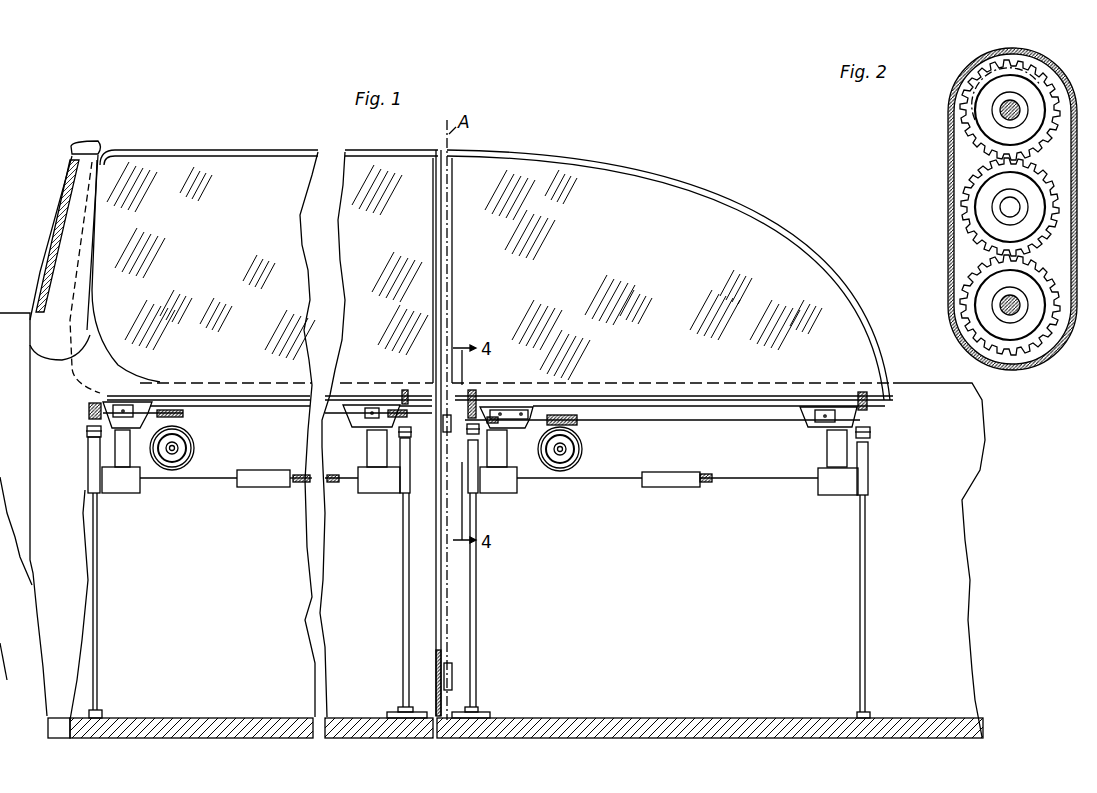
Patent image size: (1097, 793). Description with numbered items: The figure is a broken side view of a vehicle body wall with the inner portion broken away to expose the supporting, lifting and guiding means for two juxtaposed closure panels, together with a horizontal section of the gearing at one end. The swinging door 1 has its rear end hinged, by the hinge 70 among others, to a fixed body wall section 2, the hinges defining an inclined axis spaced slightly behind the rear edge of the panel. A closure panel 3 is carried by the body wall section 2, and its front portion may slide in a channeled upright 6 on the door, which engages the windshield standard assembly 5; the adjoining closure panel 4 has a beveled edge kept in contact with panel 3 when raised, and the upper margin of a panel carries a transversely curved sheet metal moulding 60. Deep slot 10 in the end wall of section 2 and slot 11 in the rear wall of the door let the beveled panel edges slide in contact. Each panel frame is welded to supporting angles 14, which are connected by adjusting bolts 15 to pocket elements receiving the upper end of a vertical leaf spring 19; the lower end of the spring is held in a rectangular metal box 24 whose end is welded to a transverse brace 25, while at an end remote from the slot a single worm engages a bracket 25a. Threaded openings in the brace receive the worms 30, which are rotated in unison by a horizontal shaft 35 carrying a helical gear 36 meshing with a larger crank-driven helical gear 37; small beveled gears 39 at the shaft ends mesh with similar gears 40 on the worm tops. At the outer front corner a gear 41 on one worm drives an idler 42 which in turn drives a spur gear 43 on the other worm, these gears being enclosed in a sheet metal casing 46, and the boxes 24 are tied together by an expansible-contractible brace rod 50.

In FIG. 1, the swinging door 1 is at (175, 708).
In FIG. 1, the body wall section 2 is at (685, 708).
In FIG. 1, the closure panel 3 is at (352, 245).
In FIG. 1, the closure panel 4 is at (668, 185).
In FIG. 1, the windshield standard assembly 5 is at (52, 228).
In FIG. 1, the channeled upright 6 is at (101, 155).
In FIG. 1, the slot 10 is at (442, 582).
In FIG. 1, the slot 11 is at (434, 592).
In FIG. 1, the supporting angle 14 is at (803, 420).
In FIG. 1, the adjusting bolt 15 is at (438, 446).
In FIG. 1, the leaf spring 19 is at (122, 447).
In FIG. 1, the rectangular member or metal box 24 is at (126, 488).
In FIG. 1, the transverse brace 25 is at (404, 480).
In FIG. 1, the bracket 25a is at (891, 458).
In FIG. 1, the worm 30 is at (97, 600).
In FIG. 2, the worm 30 is at (1012, 108).
In FIG. 1, the horizontal shaft 35 is at (268, 424).
In FIG. 1, the helical gear 36 is at (568, 414).
In FIG. 1, the helical gear 37 is at (198, 448).
In FIG. 1, the beveled gear 39 is at (90, 410).
In FIG. 1, the beveled gear 40 is at (90, 435).
In FIG. 2, the gear 41 is at (972, 290).
In FIG. 2, the idler 42 is at (968, 207).
In FIG. 2, the spur gear 43 is at (975, 118).
In FIG. 1, the sheet metal casing 46 is at (392, 708).
In FIG. 2, the sheet metal casing 46 is at (950, 148).
In FIG. 1, the expansible-contractible brace rod 50 is at (198, 480).
In FIG. 1, the sheet metal moulding 60 is at (398, 152).
In FIG. 1, the hinge 70 is at (453, 675).